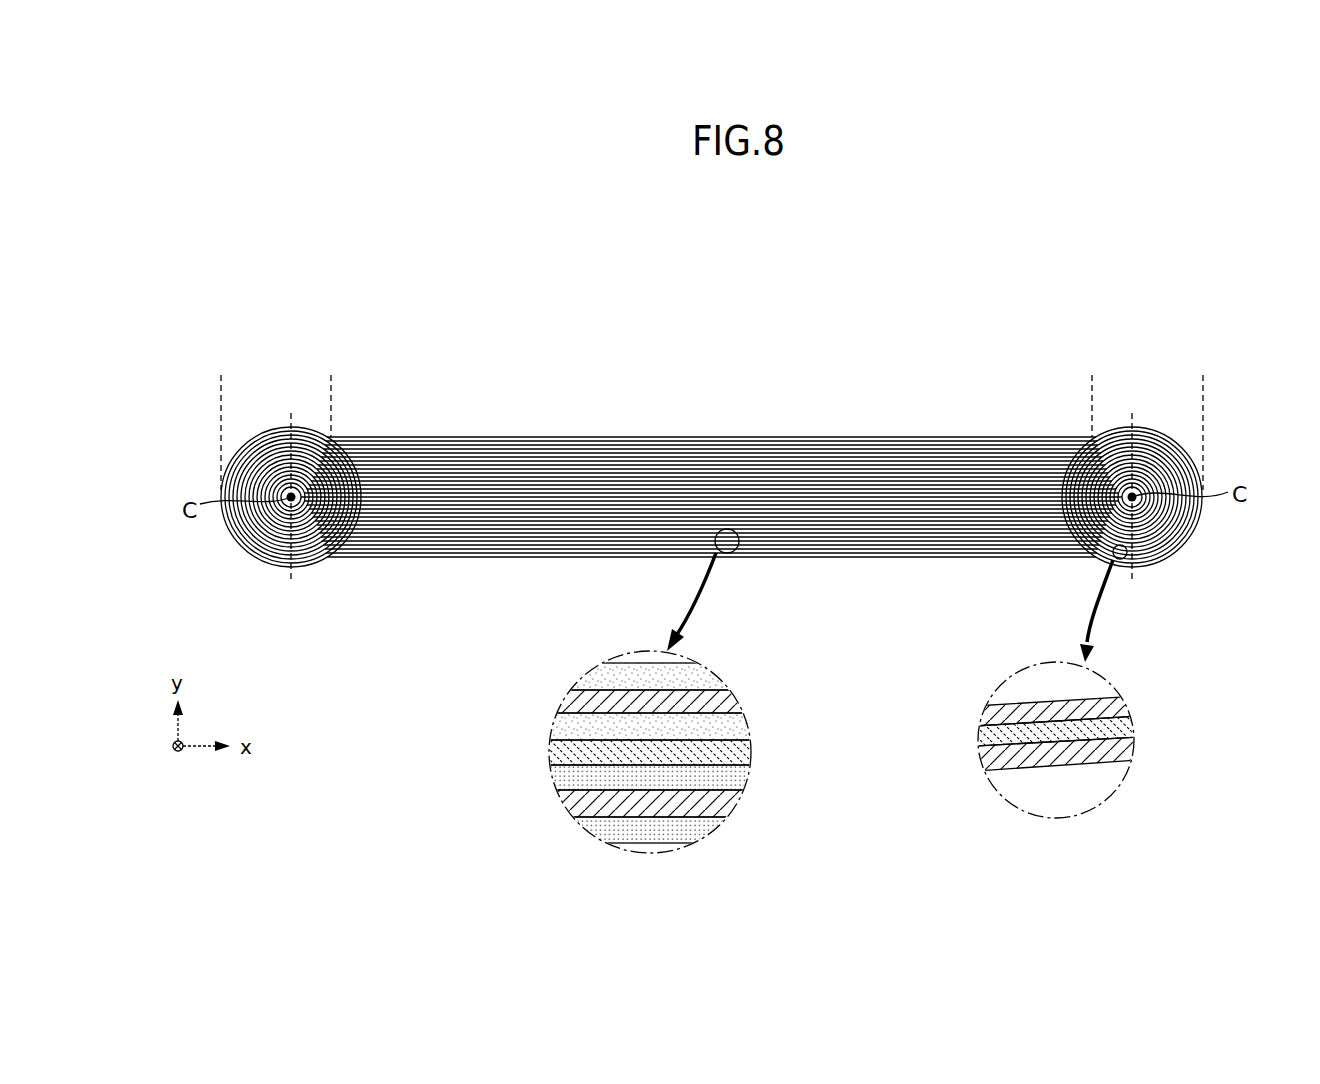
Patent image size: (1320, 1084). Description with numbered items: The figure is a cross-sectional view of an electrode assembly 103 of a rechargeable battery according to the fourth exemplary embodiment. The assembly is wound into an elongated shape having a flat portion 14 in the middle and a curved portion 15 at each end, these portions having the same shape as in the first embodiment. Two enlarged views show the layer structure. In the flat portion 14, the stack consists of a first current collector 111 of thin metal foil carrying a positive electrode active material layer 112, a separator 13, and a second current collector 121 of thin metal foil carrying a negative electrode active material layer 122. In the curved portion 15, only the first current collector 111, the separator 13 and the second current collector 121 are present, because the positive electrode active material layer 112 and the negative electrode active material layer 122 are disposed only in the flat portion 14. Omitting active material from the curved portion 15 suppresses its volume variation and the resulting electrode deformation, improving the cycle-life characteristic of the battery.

The electrode assembly 103 is at (728, 280).
The flat portion 14 is at (1092, 389).
The curved portion 15 is at (1203, 389).
The first current collector 111 is at (727, 699).
The positive electrode active material layer 112 is at (568, 727).
The separator 13 is at (568, 755).
The second current collector 121 is at (583, 801).
The negative electrode active material layer 122 is at (708, 827).